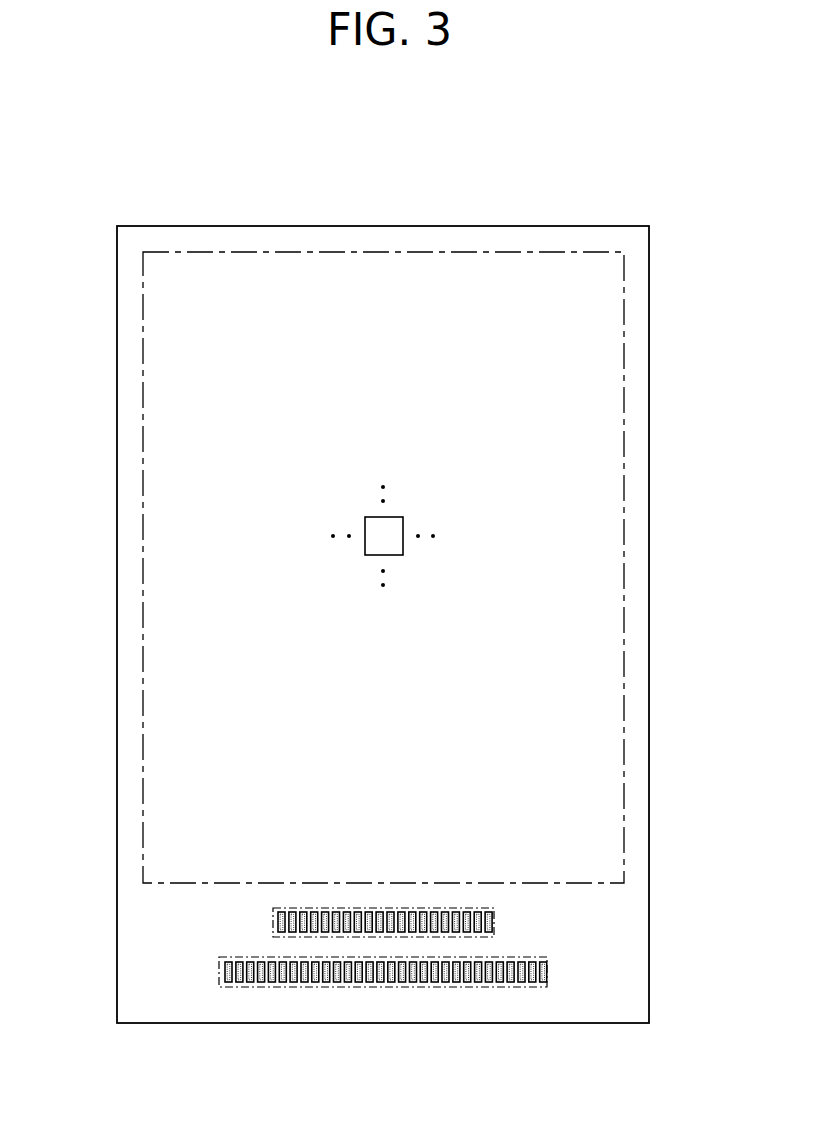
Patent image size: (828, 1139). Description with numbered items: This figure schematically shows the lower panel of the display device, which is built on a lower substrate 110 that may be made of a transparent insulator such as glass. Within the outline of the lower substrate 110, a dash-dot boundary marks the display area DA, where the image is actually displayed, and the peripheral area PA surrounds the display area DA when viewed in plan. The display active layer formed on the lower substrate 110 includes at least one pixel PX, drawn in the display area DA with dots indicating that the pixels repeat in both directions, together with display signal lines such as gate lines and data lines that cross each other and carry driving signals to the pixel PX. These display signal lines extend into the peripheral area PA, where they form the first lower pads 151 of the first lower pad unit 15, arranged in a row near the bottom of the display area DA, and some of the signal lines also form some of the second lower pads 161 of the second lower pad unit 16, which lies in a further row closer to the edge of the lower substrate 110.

The lower substrate 110 is at (650, 427).
The display area DA is at (180, 489).
The peripheral area PA is at (131, 415).
The pixel PX is at (383, 536).
The first lower pad unit 15 is at (383, 871).
The first lower pad 151 is at (362, 918).
The second lower pad unit 16 is at (383, 1024).
The second lower pad 161 is at (343, 978).